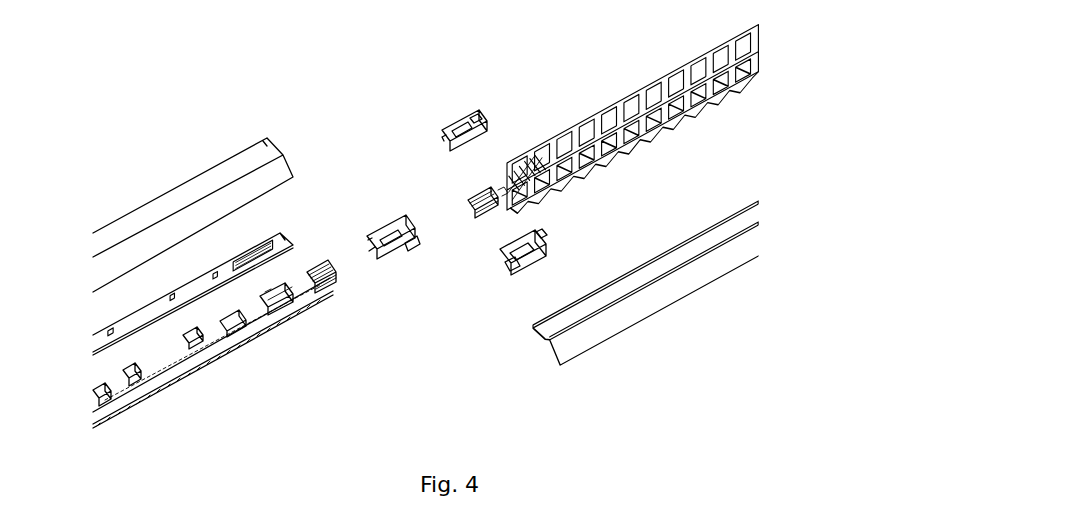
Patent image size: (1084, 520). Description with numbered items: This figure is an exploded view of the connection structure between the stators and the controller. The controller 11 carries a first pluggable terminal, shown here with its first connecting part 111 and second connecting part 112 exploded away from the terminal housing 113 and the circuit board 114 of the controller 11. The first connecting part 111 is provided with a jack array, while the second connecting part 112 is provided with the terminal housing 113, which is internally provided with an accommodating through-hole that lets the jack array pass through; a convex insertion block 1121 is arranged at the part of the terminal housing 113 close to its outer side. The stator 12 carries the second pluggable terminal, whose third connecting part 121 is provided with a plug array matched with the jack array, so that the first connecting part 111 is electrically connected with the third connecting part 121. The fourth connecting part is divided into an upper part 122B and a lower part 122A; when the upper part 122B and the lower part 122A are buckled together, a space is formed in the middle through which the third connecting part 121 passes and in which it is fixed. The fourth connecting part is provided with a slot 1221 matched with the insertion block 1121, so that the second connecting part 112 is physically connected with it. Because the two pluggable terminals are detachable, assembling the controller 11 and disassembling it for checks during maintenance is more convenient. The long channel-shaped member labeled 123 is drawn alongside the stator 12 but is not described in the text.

The controller 11 is at (203, 143).
The first connecting part 111 is at (337, 290).
The second connecting part 112 is at (366, 222).
The insertion block 1121 is at (417, 250).
The terminal housing 113 is at (133, 227).
The circuit board 114 is at (183, 363).
The stator 12 is at (490, 83).
The third connecting part 121 is at (489, 207).
The lower part of fourth connecting part 122A is at (537, 270).
The slot 1221 is at (510, 268).
The upper part of fourth connecting part 122B is at (445, 126).
The cover channel 123 is at (703, 233).